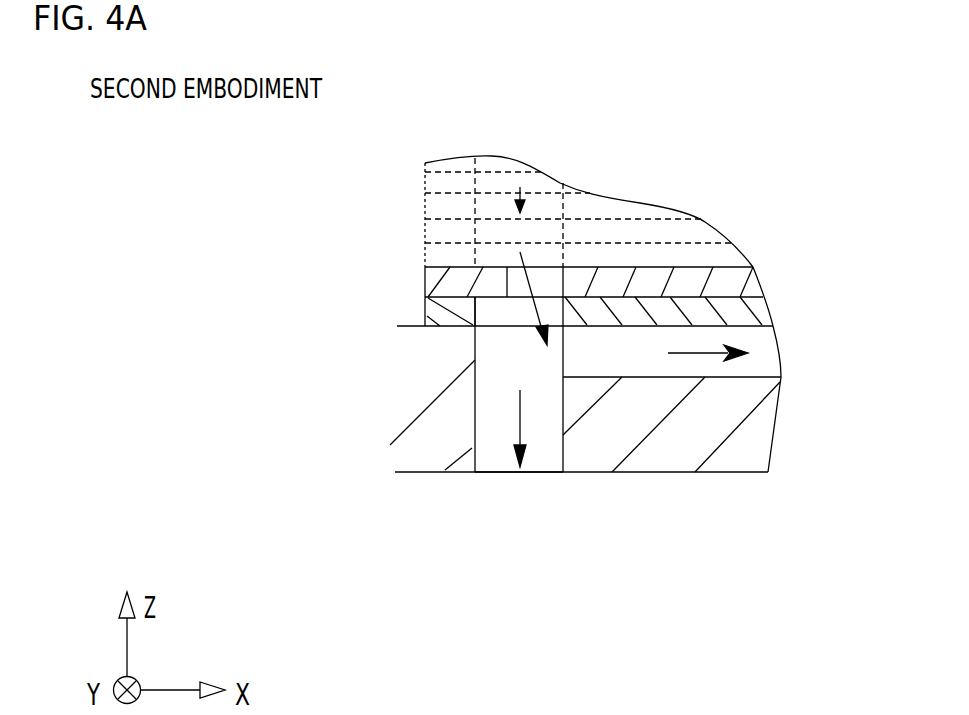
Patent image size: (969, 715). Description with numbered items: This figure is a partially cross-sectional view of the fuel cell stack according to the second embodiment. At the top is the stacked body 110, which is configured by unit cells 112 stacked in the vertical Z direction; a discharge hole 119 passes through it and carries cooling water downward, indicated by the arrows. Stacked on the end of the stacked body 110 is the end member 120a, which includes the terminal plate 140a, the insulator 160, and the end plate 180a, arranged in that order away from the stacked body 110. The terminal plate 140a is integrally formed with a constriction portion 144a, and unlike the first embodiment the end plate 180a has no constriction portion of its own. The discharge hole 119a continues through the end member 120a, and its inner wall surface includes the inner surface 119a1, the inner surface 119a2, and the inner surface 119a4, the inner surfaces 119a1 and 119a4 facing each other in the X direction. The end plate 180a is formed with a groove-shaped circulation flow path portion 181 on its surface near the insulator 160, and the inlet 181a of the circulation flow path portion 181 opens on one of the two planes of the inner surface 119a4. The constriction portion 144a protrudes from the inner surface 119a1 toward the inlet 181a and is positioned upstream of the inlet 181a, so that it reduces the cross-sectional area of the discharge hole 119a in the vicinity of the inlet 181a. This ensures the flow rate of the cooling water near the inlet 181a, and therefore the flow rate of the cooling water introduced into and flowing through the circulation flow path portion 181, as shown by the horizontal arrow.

The stacked body 110 is at (610, 198).
The discharge hole 119 is at (457, 152).
The unit cell 112 is at (642, 258).
The end member 120a is at (312, 263).
The terminal plate 140a is at (447, 287).
The constriction portion 144a is at (495, 287).
The insulator 160 is at (450, 315).
The circulation flow path portion 181 is at (753, 303).
The inlet 181a is at (562, 345).
The end plate 180a is at (423, 400).
The discharge hole 119a is at (497, 455).
The inner surface 119a1 is at (480, 442).
The inner surface 119a2 is at (535, 417).
The inner surface 119a4 is at (563, 438).